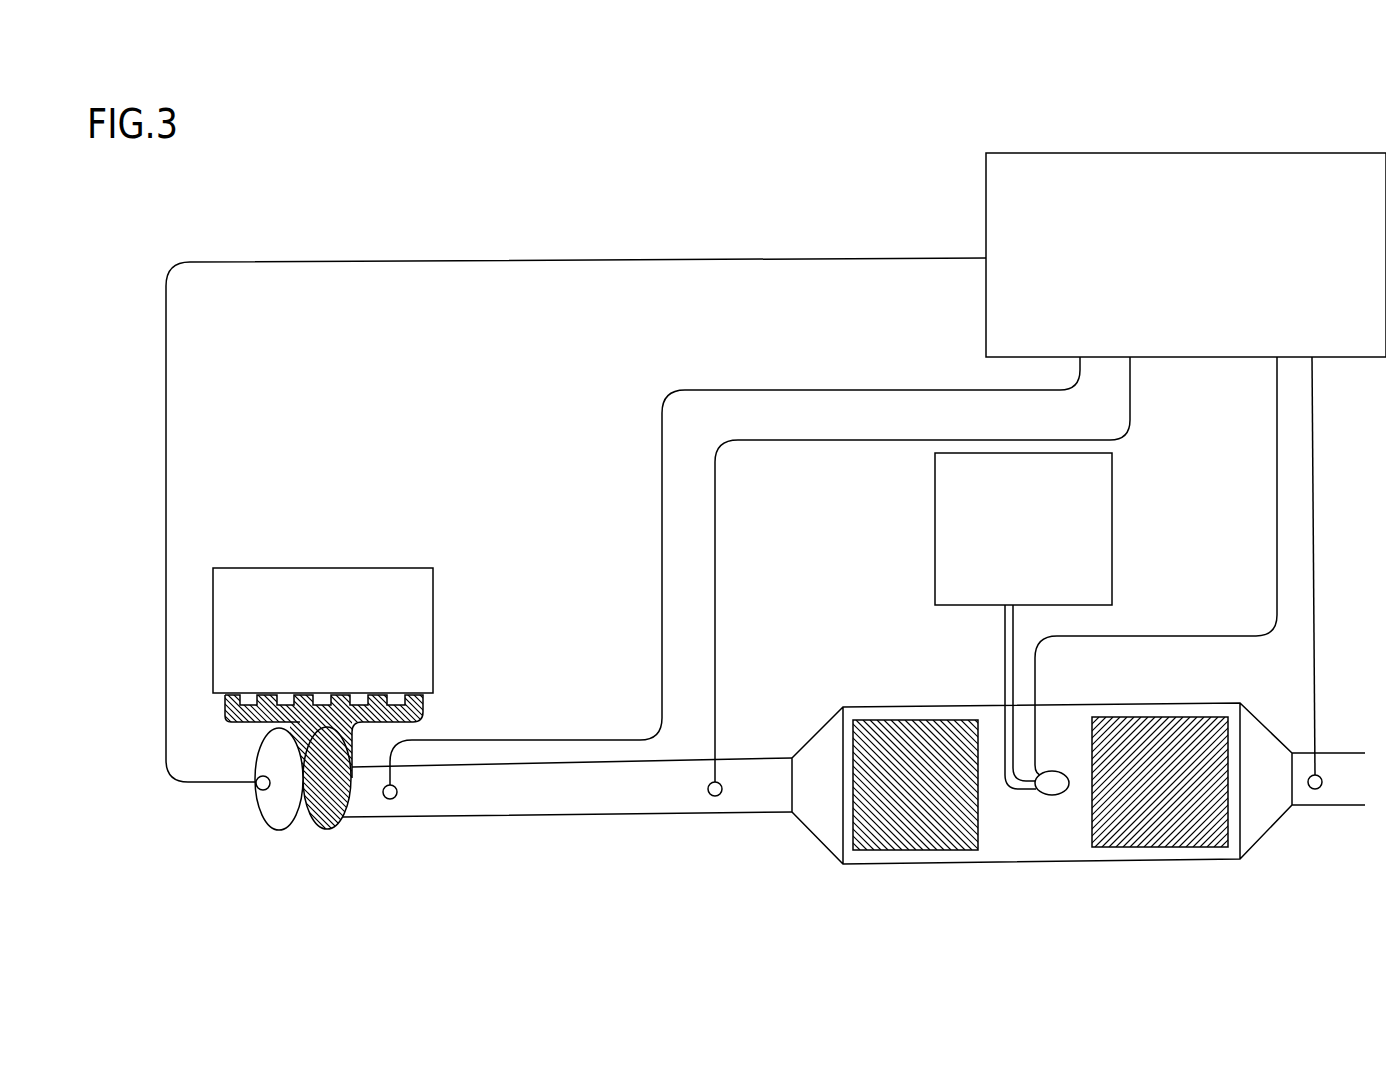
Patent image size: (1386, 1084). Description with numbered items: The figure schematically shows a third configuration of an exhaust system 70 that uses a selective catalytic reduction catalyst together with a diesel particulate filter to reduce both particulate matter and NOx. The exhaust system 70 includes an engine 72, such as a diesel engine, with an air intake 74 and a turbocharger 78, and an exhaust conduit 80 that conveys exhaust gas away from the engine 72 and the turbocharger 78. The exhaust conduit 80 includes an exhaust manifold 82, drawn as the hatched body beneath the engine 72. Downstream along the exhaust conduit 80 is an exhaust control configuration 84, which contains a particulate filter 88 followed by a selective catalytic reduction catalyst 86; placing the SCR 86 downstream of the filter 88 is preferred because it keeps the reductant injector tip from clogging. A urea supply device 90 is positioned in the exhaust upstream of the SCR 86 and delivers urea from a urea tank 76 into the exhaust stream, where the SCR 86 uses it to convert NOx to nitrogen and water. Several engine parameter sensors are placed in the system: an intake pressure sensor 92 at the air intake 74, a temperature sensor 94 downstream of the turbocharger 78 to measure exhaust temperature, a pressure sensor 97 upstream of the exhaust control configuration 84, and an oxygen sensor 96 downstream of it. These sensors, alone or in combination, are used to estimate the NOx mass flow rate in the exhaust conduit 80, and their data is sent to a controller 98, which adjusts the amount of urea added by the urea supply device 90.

The exhaust system 70 is at (787, 198).
The engine 72 is at (322, 568).
The air intake 74 is at (263, 820).
The urea tank 76 is at (1112, 522).
The turbocharger 78 is at (338, 822).
The exhaust conduit 80 is at (563, 817).
The exhaust manifold 82 is at (425, 702).
The exhaust control configuration 84 is at (1186, 875).
The selective catalytic reduction catalyst 86 is at (1155, 717).
The particulate filter 88 is at (887, 720).
The urea supply device 90 is at (1048, 796).
The intake pressure sensor 92 is at (257, 778).
The temperature sensor 94 is at (395, 786).
The oxygen sensor 96 is at (1320, 776).
The pressure sensor 97 is at (718, 796).
The controller 98 is at (1175, 150).